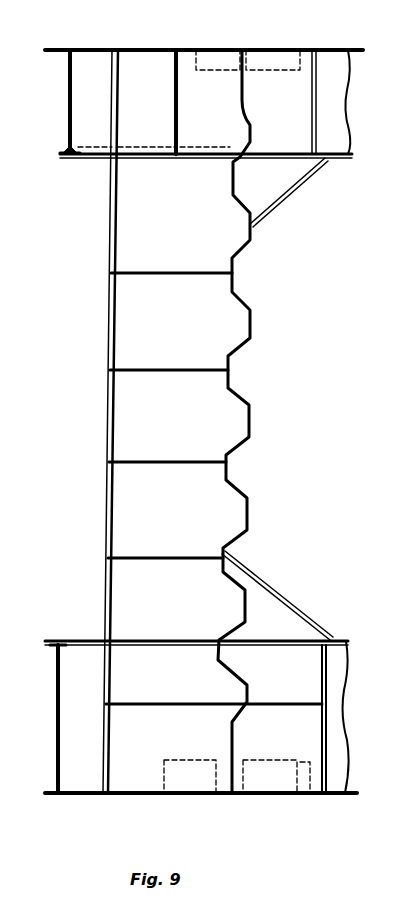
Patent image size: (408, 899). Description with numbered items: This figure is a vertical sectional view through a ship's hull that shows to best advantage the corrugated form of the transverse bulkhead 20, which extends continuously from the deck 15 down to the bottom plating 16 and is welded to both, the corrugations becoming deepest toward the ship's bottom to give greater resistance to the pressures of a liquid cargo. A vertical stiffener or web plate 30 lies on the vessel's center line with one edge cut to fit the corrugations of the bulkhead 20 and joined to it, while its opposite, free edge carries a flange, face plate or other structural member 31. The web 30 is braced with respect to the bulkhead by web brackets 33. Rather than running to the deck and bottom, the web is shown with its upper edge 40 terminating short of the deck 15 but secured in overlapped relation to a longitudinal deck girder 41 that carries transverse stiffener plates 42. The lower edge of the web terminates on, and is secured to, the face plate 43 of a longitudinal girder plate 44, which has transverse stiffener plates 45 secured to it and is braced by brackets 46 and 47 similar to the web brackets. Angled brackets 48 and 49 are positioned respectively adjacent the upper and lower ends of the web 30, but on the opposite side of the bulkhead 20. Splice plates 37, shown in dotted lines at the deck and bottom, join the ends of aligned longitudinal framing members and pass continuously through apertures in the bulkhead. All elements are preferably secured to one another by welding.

The deck 15 is at (156, 50).
The ship's bottom 16 is at (140, 793).
The transverse bulkhead 20 is at (248, 306).
The vertical stiffener 30 is at (122, 308).
The flange 31 is at (118, 338).
The web bracket 33 is at (159, 461).
The splice plate 37 is at (215, 72).
The upper edge 40 is at (222, 157).
The longitudinal deck girder 41 is at (345, 88).
The transverse stiffener plate 42 is at (175, 96).
The face plate 43 is at (150, 645).
The longitudinal girder plate 44 is at (342, 675).
The transverse stiffener plate 45 is at (104, 734).
The bracket 46 is at (185, 703).
The bracket 47 is at (293, 703).
The angled bracket 48 is at (285, 191).
The angled bracket 49 is at (290, 614).